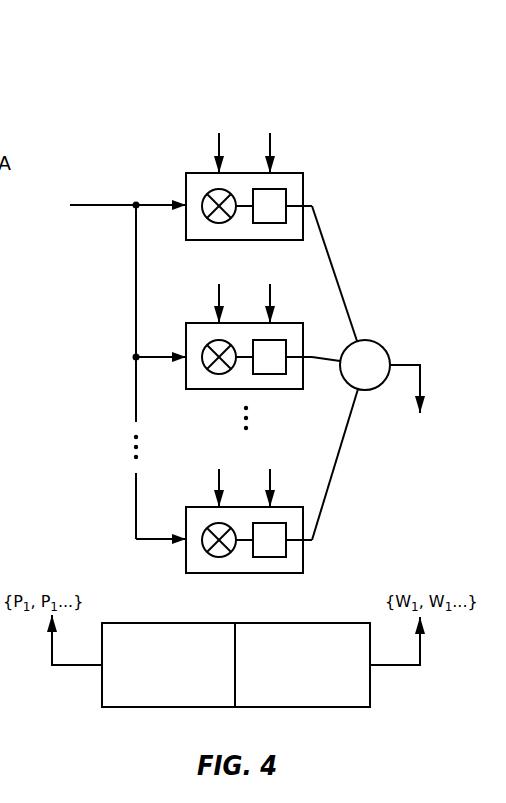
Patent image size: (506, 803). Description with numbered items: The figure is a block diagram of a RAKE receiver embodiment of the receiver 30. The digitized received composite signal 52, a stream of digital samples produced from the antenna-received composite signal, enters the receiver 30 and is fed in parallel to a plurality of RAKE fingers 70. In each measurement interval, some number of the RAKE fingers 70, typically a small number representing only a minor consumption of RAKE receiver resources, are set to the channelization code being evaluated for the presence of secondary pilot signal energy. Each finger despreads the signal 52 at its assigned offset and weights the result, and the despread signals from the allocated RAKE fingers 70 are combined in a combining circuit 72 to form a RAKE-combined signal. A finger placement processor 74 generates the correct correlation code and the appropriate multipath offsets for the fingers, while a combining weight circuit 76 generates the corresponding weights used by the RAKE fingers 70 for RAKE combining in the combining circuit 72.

The receiver 30 is at (324, 80).
The digitized version of the received composite signal 52 is at (103, 205).
The RAKE fingers 70 is at (290, 173).
The combining circuit 72 is at (378, 344).
The finger placement processor 74 is at (157, 623).
The combining weight circuit 76 is at (315, 623).